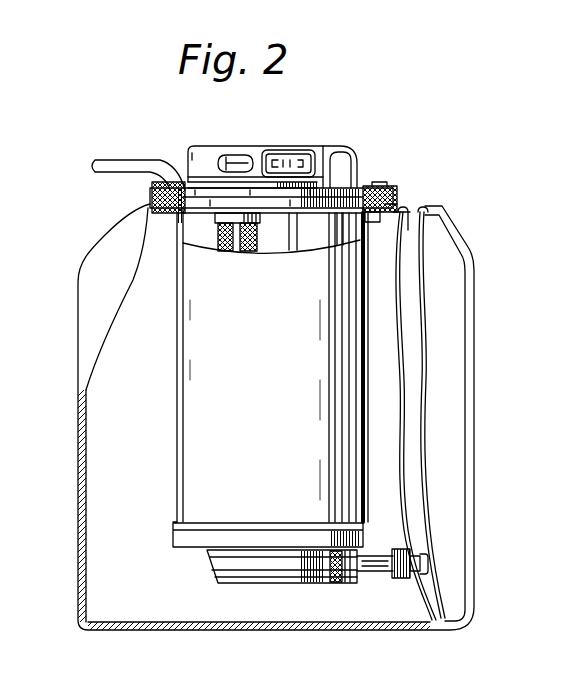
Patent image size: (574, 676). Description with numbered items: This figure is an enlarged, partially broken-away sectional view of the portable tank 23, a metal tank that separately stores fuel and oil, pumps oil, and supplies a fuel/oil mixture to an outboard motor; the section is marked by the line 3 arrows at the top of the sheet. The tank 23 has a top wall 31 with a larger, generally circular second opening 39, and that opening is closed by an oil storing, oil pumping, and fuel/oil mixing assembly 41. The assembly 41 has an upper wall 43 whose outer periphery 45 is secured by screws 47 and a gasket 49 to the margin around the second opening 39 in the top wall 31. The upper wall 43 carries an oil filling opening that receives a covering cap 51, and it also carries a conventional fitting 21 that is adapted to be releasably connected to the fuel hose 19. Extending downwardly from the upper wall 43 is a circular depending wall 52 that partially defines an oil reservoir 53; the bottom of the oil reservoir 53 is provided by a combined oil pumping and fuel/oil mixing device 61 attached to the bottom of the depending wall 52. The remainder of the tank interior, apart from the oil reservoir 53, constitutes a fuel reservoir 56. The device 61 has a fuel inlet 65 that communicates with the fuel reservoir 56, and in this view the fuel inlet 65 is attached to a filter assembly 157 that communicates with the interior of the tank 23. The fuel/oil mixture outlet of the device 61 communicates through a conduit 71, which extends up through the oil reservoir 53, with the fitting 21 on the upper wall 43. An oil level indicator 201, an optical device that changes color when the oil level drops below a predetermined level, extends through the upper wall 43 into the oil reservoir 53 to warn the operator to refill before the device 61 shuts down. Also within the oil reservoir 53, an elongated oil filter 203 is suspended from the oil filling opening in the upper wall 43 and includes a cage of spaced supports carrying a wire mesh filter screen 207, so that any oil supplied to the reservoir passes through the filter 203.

The section line 3- 3 is at (76, 114).
The fuel hose 19 is at (213, 147).
The fitting 21 is at (340, 163).
The tank 23 is at (435, 418).
The top wall 31 is at (147, 193).
The second opening 39 is at (344, 240).
The oil storing, oil pumping, and fuel/oil mixing assembly 41 is at (170, 352).
The upper wall 43 is at (365, 192).
The outer periphery 45 is at (392, 190).
The screws 47 is at (380, 184).
The gasket 49 is at (400, 200).
The covering cap 51 is at (235, 150).
The depending wall 52 is at (176, 390).
The oil reservoir 53 is at (297, 349).
The fuel reservoir 56 is at (100, 473).
The combined oil pumping and fuel/oil mixing device 61 is at (200, 567).
The fuel inlet 65 is at (372, 585).
The conduit 71 is at (337, 225).
The filter assembly 157 is at (418, 540).
The oil level indicator 201 is at (297, 245).
The oil filter 203 is at (210, 242).
The wire mesh filter screen 207 is at (227, 250).